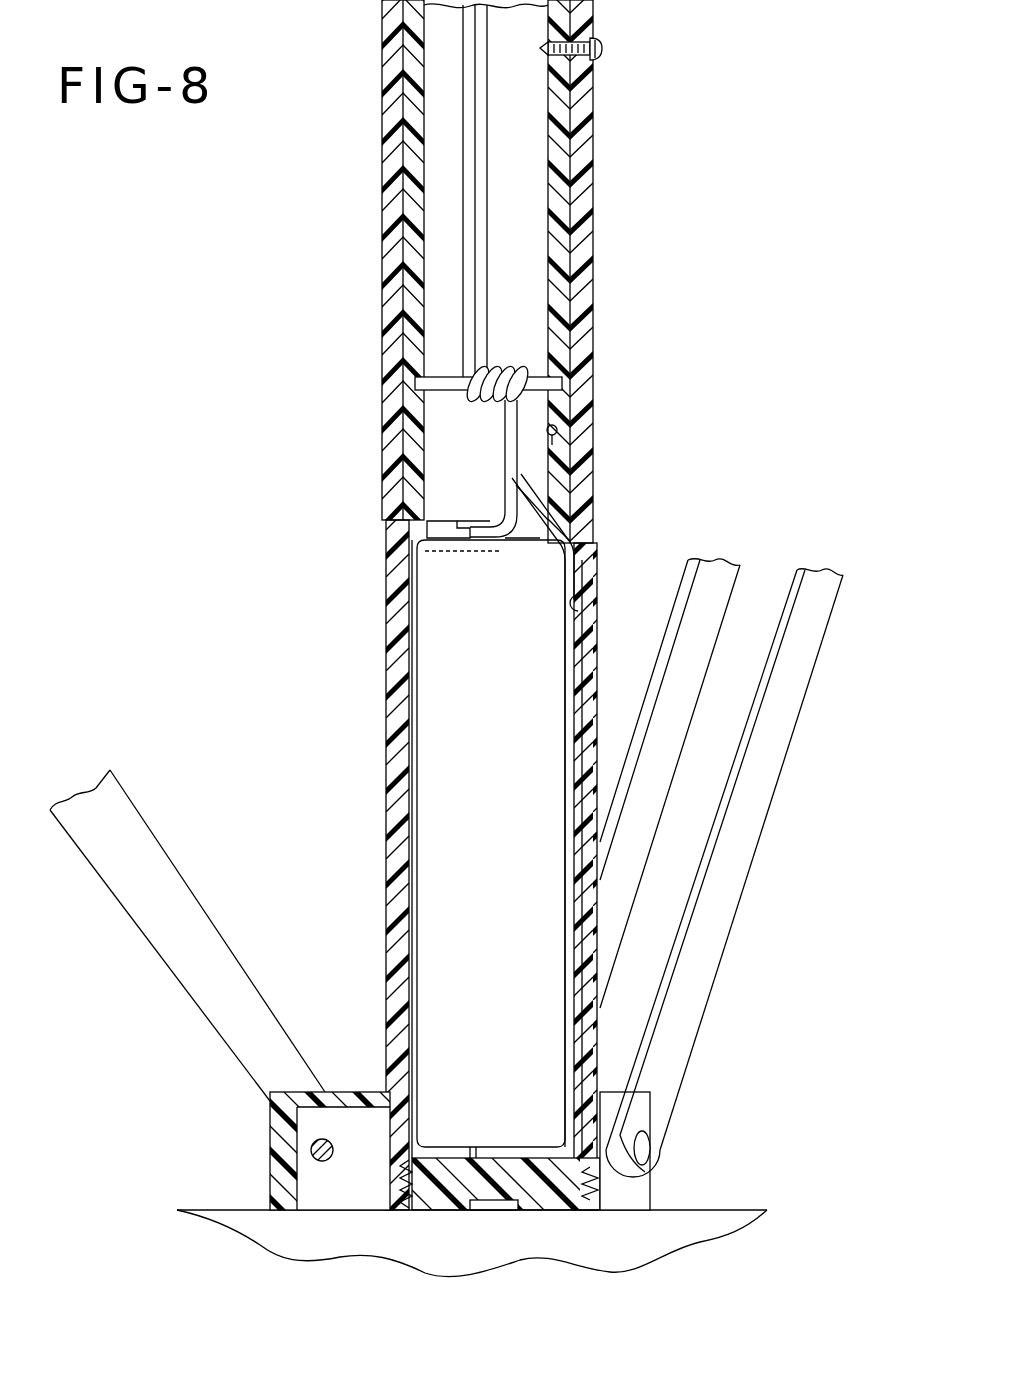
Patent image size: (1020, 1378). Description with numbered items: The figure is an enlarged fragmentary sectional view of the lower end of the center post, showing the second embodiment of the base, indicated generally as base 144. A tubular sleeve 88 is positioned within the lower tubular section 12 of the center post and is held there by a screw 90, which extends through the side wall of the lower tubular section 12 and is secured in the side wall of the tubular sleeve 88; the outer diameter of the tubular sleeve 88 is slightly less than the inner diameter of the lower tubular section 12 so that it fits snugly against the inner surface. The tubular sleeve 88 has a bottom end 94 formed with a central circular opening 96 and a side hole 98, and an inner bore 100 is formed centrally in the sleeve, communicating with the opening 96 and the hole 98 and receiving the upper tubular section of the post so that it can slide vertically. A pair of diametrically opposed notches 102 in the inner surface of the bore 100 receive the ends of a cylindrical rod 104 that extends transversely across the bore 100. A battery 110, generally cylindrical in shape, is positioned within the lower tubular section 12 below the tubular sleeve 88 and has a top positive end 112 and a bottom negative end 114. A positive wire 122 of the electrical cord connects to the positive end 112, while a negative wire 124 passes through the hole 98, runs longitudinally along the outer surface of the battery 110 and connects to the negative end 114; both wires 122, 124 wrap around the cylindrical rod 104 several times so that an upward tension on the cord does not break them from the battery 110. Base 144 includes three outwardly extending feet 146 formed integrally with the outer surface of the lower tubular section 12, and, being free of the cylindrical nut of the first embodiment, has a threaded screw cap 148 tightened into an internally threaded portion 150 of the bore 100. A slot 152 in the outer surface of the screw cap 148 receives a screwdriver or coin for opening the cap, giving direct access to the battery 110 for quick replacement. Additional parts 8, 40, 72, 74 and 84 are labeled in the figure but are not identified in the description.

The panel 8 is at (162, 990).
The lower tubular section 12 is at (585, 295).
The retainer 40 is at (579, 598).
The hinge end 72 is at (645, 1178).
The pin 74 is at (320, 1150).
The floor 84 is at (750, 1210).
The tubular sleeve 88 is at (410, 103).
The screw 90 is at (604, 47).
The bottom end 94 is at (432, 531).
The central circular opening 96 is at (522, 508).
The side hole 98 is at (512, 537).
The inner bore 100 is at (556, 432).
The notches 102 is at (410, 382).
The cylindrical rod 104 is at (452, 395).
The battery 110 is at (440, 692).
The top positive end 112 is at (437, 563).
The bottom negative end 114 is at (483, 1130).
The positive wire 122 is at (478, 523).
The negative wire 124 is at (535, 485).
The base 144 is at (265, 1093).
The feet 146 is at (612, 1107).
The threaded screw cap 148 is at (555, 1200).
The internally threaded portion 150 is at (424, 1180).
The slot 152 is at (490, 1203).